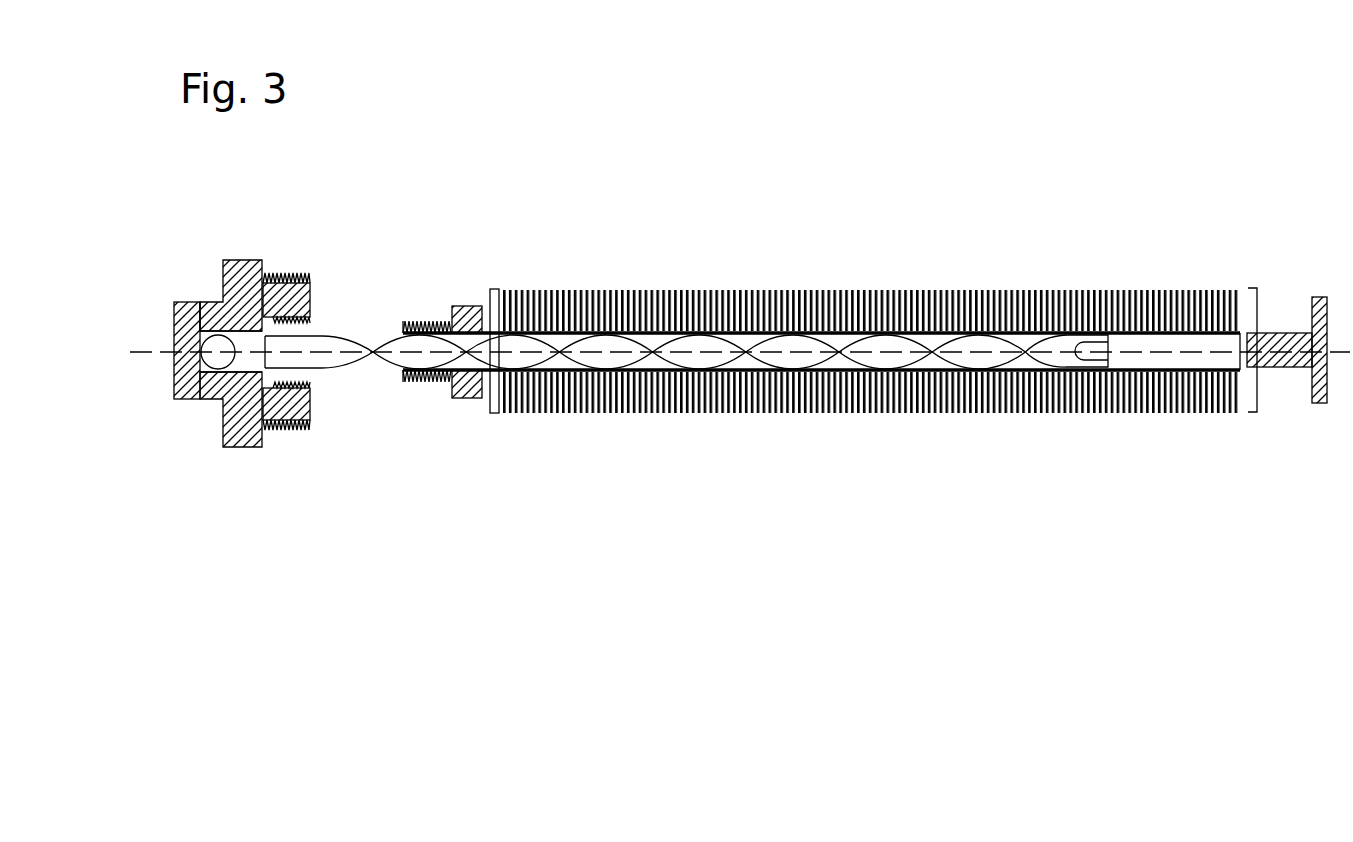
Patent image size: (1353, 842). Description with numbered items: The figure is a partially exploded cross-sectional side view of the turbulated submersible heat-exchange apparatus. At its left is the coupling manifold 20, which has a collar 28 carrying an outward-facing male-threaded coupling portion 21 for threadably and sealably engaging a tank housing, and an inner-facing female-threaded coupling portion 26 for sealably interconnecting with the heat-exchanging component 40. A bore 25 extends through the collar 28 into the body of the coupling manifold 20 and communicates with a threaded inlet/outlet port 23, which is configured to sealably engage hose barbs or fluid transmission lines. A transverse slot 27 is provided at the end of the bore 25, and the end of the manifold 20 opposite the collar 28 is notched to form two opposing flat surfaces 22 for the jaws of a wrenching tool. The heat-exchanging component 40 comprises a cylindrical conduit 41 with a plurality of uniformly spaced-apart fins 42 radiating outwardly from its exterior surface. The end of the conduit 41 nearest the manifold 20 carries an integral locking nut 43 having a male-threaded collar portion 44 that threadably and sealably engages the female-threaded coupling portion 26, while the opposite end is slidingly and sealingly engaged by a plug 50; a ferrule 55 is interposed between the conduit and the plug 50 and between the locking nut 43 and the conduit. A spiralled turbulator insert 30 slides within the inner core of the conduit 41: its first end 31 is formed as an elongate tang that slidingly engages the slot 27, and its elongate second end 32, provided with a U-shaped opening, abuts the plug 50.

The coupling manifold 20 is at (240, 246).
The male-threaded coupling portion 21 is at (277, 430).
The flat surfaces 22 is at (192, 302).
The threaded inlet/outlet port 23 is at (213, 370).
The bore 25 is at (249, 372).
The female-threaded coupling portion 26 is at (300, 430).
The transverse slot 27 is at (200, 303).
The collar 28 is at (287, 272).
The turbulator insert 30 is at (340, 336).
The first end 31 is at (282, 362).
The second end 32 is at (1096, 352).
The heat-exchanging component 40 is at (871, 272).
The cylindrical conduit 41 is at (393, 382).
The fins 42 is at (695, 290).
The locking nut 43 is at (463, 398).
The male-threaded collar portion 44 is at (415, 322).
The plug 50 is at (1318, 405).
The ferrule 55 is at (494, 413).